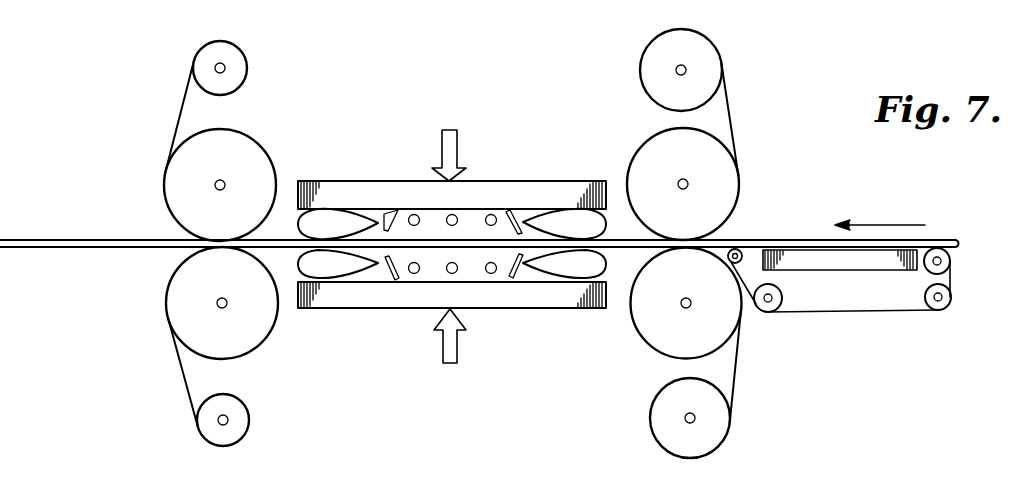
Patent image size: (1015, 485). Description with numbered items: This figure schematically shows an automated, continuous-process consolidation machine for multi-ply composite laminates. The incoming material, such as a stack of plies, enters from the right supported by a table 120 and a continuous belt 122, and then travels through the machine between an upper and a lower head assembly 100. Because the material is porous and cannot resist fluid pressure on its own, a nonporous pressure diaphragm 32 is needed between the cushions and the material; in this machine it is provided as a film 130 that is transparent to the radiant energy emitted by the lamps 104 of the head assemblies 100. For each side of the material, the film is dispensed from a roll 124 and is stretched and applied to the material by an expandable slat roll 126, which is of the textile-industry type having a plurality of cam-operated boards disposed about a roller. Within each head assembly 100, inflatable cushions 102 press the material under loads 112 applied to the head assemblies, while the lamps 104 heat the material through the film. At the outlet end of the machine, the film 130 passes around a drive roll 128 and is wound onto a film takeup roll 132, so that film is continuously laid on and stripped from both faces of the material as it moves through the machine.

The pressure diaphragm 32 is at (236, 58).
The drive roll 128 is at (232, 141).
The film takeup roll 132 is at (231, 438).
The roll 124 is at (704, 51).
The expandable slat roll 126 is at (727, 193).
The film 130 is at (733, 120).
The head assembly 100 is at (388, 150).
The cushion 102 is at (610, 212).
The lamp 104 is at (493, 214).
The load 112 is at (456, 142).
The continuous belt 122 is at (783, 315).
The table 120 is at (880, 262).